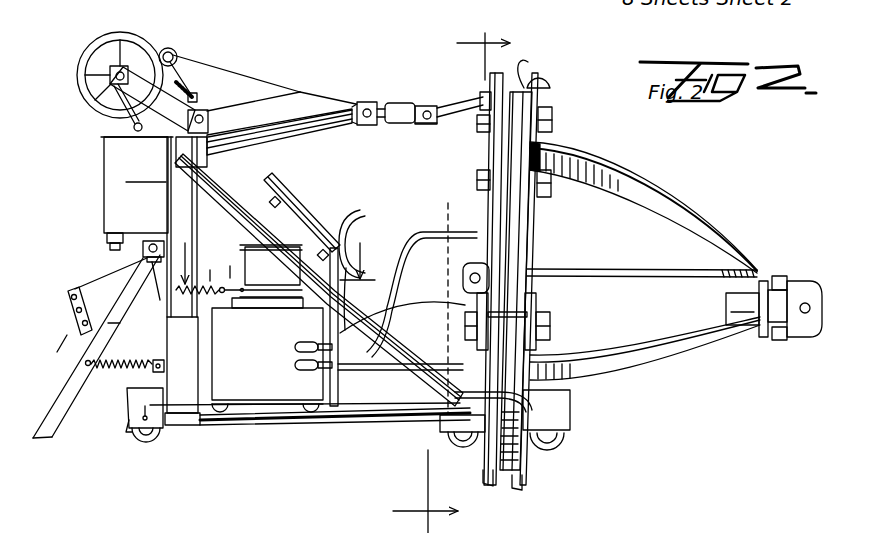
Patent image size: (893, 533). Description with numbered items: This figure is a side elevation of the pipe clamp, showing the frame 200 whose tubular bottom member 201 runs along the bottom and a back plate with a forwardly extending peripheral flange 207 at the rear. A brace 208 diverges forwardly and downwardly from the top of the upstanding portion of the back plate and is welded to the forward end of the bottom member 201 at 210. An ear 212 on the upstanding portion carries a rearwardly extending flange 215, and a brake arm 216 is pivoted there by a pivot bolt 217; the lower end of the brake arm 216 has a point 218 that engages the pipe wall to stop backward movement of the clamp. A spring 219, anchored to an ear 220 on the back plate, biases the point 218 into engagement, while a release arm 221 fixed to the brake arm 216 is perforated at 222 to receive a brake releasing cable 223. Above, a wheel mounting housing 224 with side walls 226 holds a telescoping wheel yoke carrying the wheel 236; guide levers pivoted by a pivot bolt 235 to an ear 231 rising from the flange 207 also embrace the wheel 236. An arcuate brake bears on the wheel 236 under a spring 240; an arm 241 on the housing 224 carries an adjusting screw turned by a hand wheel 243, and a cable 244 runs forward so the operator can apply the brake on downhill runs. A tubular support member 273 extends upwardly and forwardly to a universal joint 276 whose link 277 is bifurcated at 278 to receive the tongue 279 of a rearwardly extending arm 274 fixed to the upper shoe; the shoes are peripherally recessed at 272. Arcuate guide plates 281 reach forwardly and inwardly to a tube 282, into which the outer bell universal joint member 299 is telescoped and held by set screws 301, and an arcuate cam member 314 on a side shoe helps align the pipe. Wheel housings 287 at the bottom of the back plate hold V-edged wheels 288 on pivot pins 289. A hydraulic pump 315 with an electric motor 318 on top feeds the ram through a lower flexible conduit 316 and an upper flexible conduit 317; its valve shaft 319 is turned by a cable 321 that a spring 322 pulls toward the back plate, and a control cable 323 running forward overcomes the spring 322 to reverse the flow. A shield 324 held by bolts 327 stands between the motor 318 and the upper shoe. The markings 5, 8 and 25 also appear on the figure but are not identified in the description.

The section line 5- 5 is at (443, 283).
The section line 8- 8 is at (276, 252).
The hose 25 is at (342, 266).
The frame 200 is at (380, 414).
The tubular bottom member 201 is at (282, 422).
The continuous peripheral flange 207 is at (186, 400).
The brace 208 is at (229, 207).
The brace attachment point 210 is at (460, 404).
The ear 212 is at (158, 282).
The rearwardly extending flange 215 is at (147, 241).
The brake arm 216 is at (133, 325).
The pivot bolt 217 is at (145, 255).
The point 218 is at (38, 443).
The spring 219 is at (111, 368).
The ear 220 is at (153, 362).
The release arm 221 is at (66, 360).
The perforation 222 is at (75, 310).
The brake releasing cable 223 is at (73, 290).
The wheel mounting housing 224 is at (104, 197).
The side walls 226 is at (145, 172).
The ear 231 is at (258, 98).
The pivot bolt 235 is at (210, 119).
The wheel 236 is at (80, 80).
The spring 240 is at (172, 52).
The arm 241 is at (196, 90).
The hand wheel 243 is at (199, 98).
The cable 244 is at (290, 89).
The peripheral recess 272 is at (522, 78).
The tubular support member 273 is at (316, 128).
The rearwardly extending arm 274 is at (462, 120).
The universal joint 276 is at (366, 100).
The link 277 is at (400, 103).
The bifurcations 278 is at (425, 126).
The tongue 279 is at (430, 106).
The arcuate guide plates 281 is at (643, 365).
The tube 282 is at (726, 310).
The wheel housings 287 is at (128, 420).
The wheels 288 is at (146, 442).
The pivot pins 289 is at (146, 408).
The outer bell universal joint member 299 is at (795, 345).
The set screws 301 is at (770, 342).
The arcuate cam member 314 is at (551, 79).
The hydraulic pump 315 is at (243, 388).
The lower flexible conduit 316 is at (383, 371).
The upper flexible conduit 317 is at (420, 240).
The electric motor 318 is at (233, 258).
The shaft 319 is at (295, 327).
The cable 321 is at (267, 360).
The spring 322 is at (210, 262).
The control cable 323 is at (402, 319).
The shield 324 is at (310, 222).
The bolts 327 is at (293, 198).